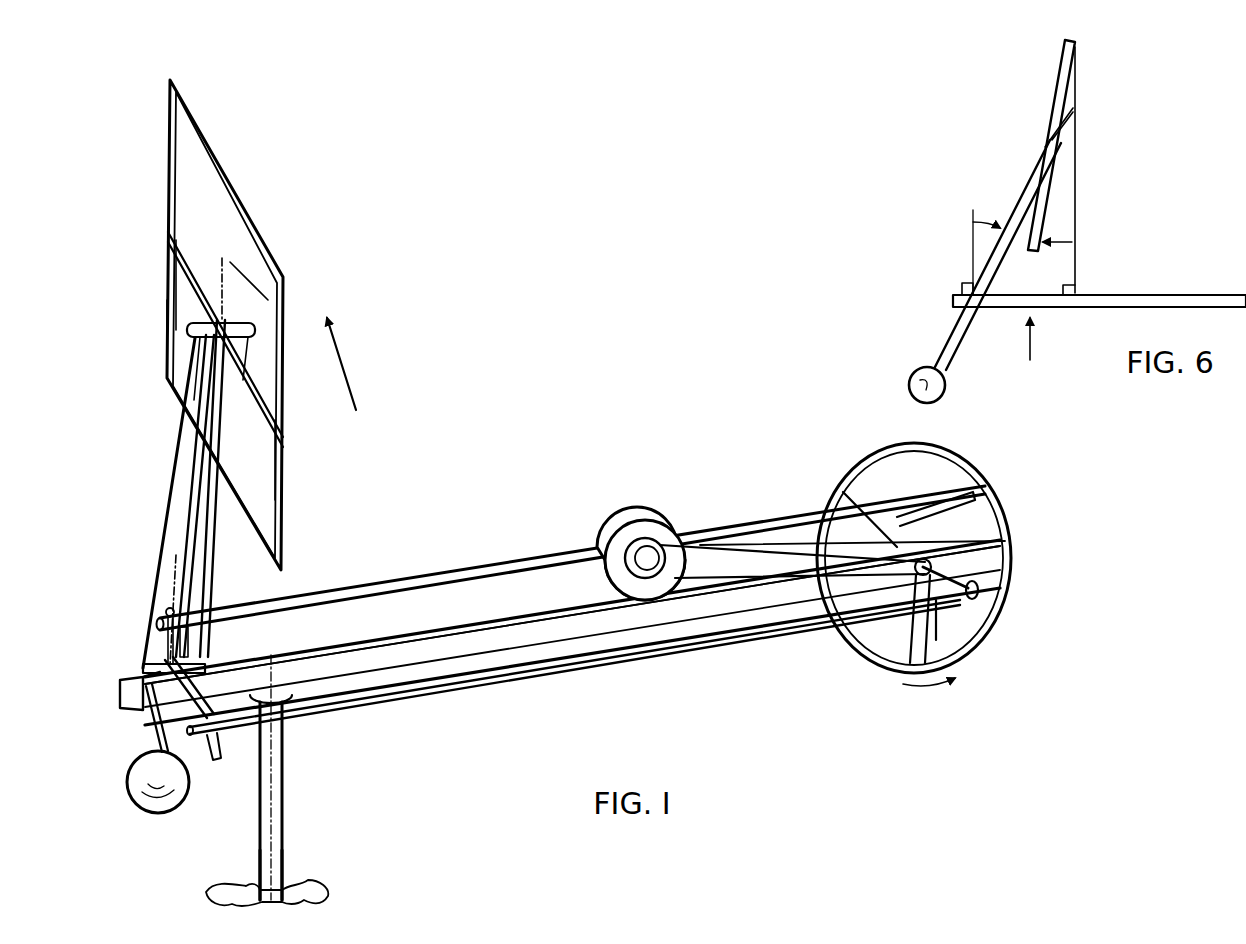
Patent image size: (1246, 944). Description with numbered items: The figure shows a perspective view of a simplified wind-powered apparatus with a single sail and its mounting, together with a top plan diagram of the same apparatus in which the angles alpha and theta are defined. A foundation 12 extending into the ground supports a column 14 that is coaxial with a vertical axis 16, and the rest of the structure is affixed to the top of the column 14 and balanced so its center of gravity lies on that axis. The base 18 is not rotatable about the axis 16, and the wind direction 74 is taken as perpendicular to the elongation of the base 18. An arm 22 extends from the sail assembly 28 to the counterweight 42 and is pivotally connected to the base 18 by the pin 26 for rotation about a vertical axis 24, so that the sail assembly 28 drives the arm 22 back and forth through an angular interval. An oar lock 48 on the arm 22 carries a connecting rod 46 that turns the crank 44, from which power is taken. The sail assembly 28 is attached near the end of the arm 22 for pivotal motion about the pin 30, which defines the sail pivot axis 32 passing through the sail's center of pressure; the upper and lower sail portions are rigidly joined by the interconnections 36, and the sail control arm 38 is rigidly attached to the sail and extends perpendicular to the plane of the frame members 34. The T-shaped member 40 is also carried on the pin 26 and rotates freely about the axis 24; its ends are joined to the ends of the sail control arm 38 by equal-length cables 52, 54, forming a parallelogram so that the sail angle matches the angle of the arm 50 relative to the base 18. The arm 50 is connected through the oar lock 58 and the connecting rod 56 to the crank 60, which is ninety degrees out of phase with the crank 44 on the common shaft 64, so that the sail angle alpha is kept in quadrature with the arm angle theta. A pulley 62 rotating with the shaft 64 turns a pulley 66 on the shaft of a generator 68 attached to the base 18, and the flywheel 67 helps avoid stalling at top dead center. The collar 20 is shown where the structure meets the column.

In FIG. 1, the foundation 12 is at (300, 886).
In FIG. 1, the column 14 is at (259, 862).
In FIG. 1, the vertical axis 16 is at (276, 824).
In FIG. 1, the base 18 is at (762, 606).
In FIG. 6, the base 18 is at (1228, 297).
In FIG. 1, the swivel collar 20 is at (276, 656).
In FIG. 1, the arm 22 is at (184, 540).
In FIG. 6, the arm 22 is at (1030, 172).
In FIG. 1, the vertical axis 24 is at (172, 567).
In FIG. 1, the pin 26 is at (188, 653).
In FIG. 1, the sail assembly 28 is at (162, 166).
In FIG. 6, the sail assembly 28 is at (1058, 78).
In FIG. 1, the pin 30 is at (222, 290).
In FIG. 1, the sail pivot axis 32 is at (224, 264).
In FIG. 1, the frame members 34 is at (166, 328).
In FIG. 1, the interconnections 36 is at (182, 242).
In FIG. 1, the sail control arm 38 is at (244, 332).
In FIG. 1, the T-shaped member 40 is at (142, 676).
In FIG. 1, the counterweight 42 is at (160, 790).
In FIG. 1, the crank 44 is at (906, 508).
In FIG. 1, the connecting rod 46 is at (360, 590).
In FIG. 1, the oar lock 48 is at (166, 611).
In FIG. 1, the arm 50 is at (166, 705).
In FIG. 1, the cable 52 is at (176, 470).
In FIG. 1, the cable 54 is at (221, 528).
In FIG. 1, the connecting rod 56 is at (566, 668).
In FIG. 1, the oar lock 58 is at (220, 744).
In FIG. 1, the crank 60 is at (980, 588).
In FIG. 1, the pulley 62 is at (1003, 556).
In FIG. 1, the common shaft 64 is at (1000, 546).
In FIG. 1, the pulley 66 is at (670, 540).
In FIG. 1, the flywheel 67 is at (978, 470).
In FIG. 1, the generator 68 is at (600, 526).
In FIG. 1, the wind direction 74 is at (340, 336).
In FIG. 6, the wind direction 74 is at (1028, 350).